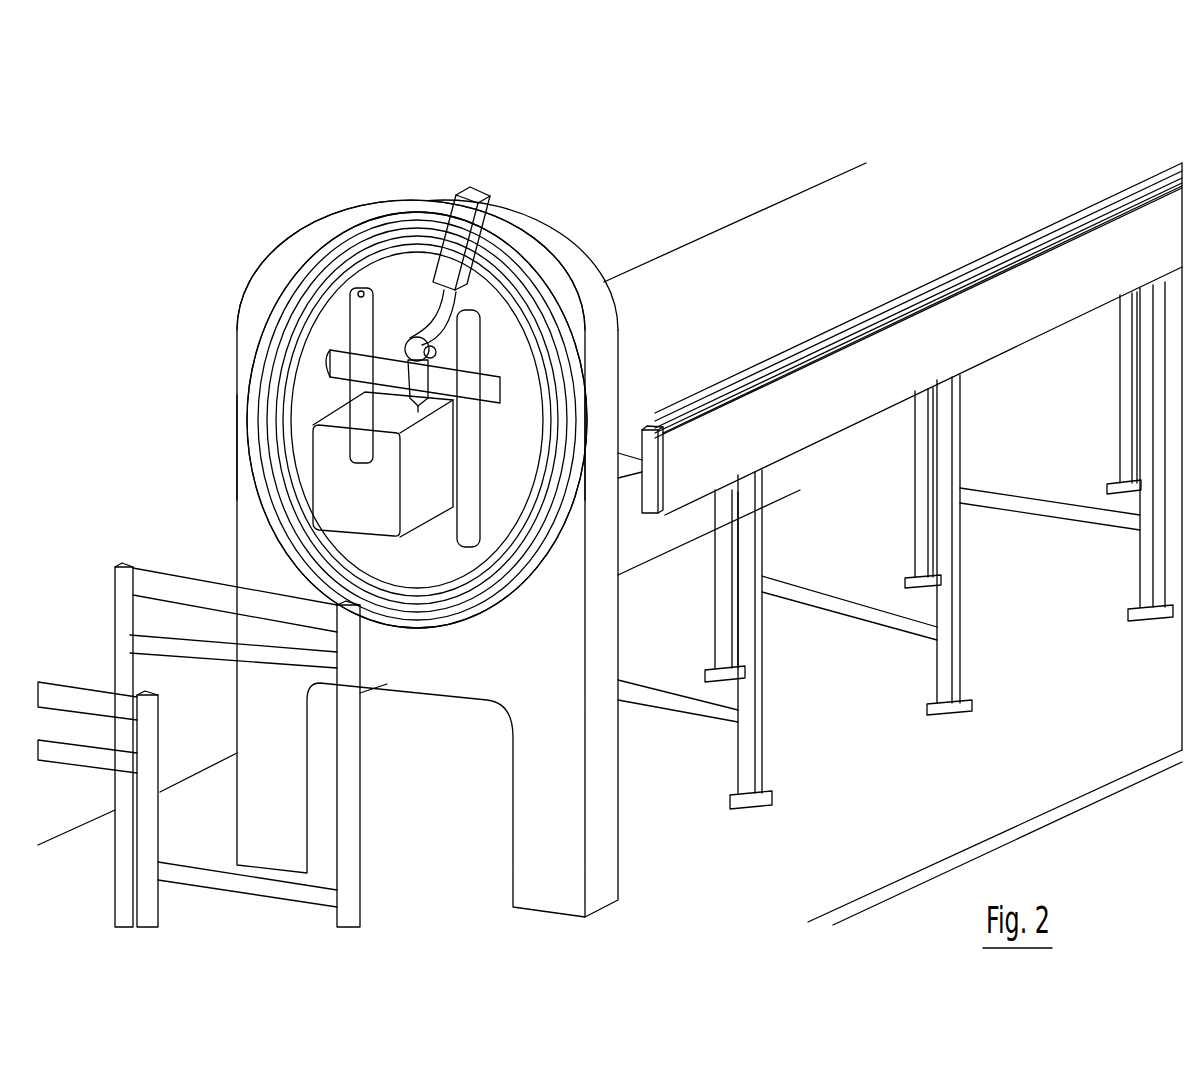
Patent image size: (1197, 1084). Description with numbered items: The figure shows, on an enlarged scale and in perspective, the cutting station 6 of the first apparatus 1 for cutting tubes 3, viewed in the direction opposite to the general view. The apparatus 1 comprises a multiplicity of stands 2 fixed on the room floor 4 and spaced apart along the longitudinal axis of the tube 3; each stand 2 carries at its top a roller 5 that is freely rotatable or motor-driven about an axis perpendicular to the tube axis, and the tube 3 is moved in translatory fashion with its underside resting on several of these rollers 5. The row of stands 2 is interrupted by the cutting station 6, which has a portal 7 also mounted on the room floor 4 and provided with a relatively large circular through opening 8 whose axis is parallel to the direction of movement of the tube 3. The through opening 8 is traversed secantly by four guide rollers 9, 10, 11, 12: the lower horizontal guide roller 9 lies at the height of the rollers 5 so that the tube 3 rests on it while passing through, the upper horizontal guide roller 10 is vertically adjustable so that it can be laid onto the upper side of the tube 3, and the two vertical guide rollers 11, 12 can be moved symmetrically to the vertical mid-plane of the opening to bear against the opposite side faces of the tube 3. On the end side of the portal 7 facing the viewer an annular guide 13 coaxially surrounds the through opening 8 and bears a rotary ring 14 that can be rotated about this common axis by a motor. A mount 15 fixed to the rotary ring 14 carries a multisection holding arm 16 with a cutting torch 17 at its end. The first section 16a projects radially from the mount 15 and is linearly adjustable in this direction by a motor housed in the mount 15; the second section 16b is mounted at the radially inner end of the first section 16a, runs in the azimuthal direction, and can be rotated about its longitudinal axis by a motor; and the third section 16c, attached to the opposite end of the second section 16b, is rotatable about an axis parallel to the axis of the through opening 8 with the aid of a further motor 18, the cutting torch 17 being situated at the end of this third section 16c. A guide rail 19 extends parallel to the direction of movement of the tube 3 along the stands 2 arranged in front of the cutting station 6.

The apparatus 1 is at (222, 178).
The stand 2 is at (347, 810).
The tube 3 is at (779, 268).
The room floor 4 is at (1072, 770).
The roller 5 is at (65, 690).
The cutting station 6 is at (213, 262).
The portal 7 is at (572, 805).
The through opening 8 is at (290, 416).
The lower horizontal guide roller 9 is at (493, 517).
The upper horizontal guide roller 10 is at (578, 262).
The vertical guide roller 11 is at (350, 318).
The vertical guide roller 12 is at (612, 300).
The annular guide 13 is at (240, 345).
The rotary ring 14 is at (270, 480).
The mount 15 is at (450, 232).
The holding arm 16 is at (395, 237).
The first section 16a is at (462, 305).
The second section 16b is at (362, 314).
The third section 16c is at (448, 385).
The cutting torch 17 is at (402, 338).
The motor 18 is at (420, 400).
The guide rail 19 is at (985, 313).